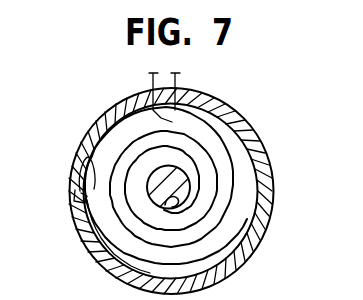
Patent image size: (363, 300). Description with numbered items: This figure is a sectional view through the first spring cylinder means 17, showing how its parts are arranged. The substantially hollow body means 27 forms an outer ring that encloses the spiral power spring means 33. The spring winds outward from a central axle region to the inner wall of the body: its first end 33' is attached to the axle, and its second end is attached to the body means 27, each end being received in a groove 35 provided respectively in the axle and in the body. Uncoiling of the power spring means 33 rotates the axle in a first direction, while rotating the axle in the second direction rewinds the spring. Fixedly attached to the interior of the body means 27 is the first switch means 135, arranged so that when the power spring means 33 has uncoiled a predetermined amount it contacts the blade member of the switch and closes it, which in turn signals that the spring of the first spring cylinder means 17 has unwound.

The first spring cylinder means 17 is at (288, 156).
The body means 27 is at (270, 190).
The spiral power spring means 33 is at (196, 186).
The first end of the power spring means 33' is at (238, 216).
The grooves 35 is at (175, 193).
The first switch means 135 is at (191, 115).